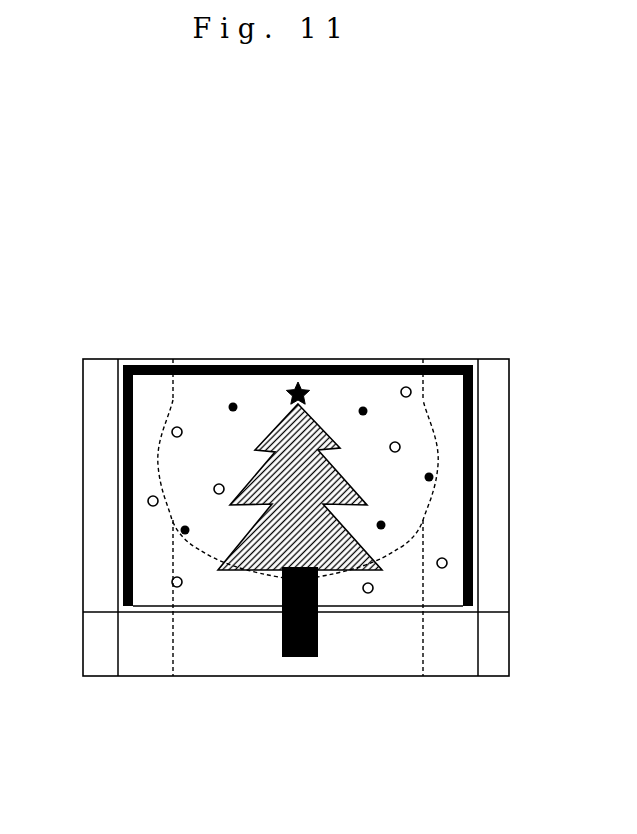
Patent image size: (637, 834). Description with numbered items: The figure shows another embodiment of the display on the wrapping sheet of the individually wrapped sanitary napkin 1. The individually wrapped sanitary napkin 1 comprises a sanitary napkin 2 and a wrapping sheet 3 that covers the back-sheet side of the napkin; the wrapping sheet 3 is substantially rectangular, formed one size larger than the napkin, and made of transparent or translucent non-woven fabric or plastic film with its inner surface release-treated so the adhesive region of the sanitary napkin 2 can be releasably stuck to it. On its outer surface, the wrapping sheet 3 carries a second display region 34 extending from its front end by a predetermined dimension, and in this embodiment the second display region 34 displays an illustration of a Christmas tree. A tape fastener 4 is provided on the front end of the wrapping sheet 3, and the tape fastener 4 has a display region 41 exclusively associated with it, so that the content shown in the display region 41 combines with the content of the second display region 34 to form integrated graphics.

The individually wrapped sanitary napkin 1 is at (86, 328).
The sanitary napkin 2 is at (193, 653).
The wrapping sheet 3 is at (98, 468).
The second display region 34 is at (210, 384).
The tape fastener 4 is at (286, 655).
The display region of the tape fastener 41 is at (319, 655).